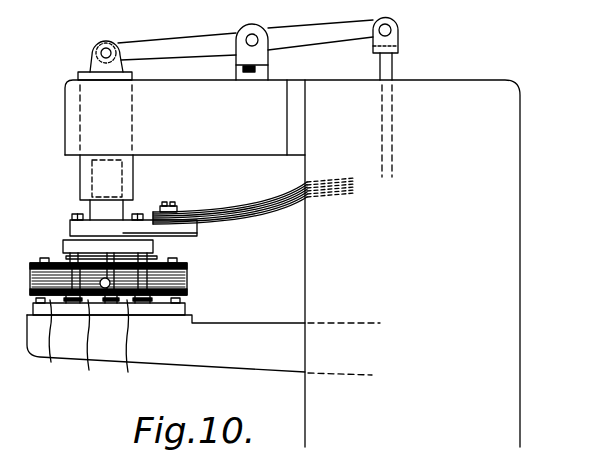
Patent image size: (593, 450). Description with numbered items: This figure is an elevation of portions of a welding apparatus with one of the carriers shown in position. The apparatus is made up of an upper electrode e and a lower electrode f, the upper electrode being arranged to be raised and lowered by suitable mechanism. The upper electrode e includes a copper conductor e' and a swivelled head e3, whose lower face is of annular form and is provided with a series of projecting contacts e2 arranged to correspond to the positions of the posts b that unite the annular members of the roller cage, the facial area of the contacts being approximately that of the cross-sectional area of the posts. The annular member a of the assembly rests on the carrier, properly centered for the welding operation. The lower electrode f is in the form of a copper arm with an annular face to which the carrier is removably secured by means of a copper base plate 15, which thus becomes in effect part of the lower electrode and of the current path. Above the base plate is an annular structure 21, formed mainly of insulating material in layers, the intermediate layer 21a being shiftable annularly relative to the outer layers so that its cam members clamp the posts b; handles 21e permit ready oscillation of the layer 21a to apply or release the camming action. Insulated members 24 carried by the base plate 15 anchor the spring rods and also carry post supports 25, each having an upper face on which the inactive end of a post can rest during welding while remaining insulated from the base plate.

The upper electrode e is at (115, 228).
The copper conductor e' is at (254, 211).
The projecting contacts e2 is at (66, 257).
The swivelled head e3 is at (152, 246).
The annular member a is at (45, 260).
The posts b is at (156, 263).
The annular structure 21 is at (182, 268).
The intermediate layer 21a is at (185, 283).
The handles 21e is at (136, 348).
The base plate 15 is at (36, 306).
The insulated member 24 is at (51, 362).
The post supports 25 is at (91, 348).
The lower electrode f is at (208, 360).